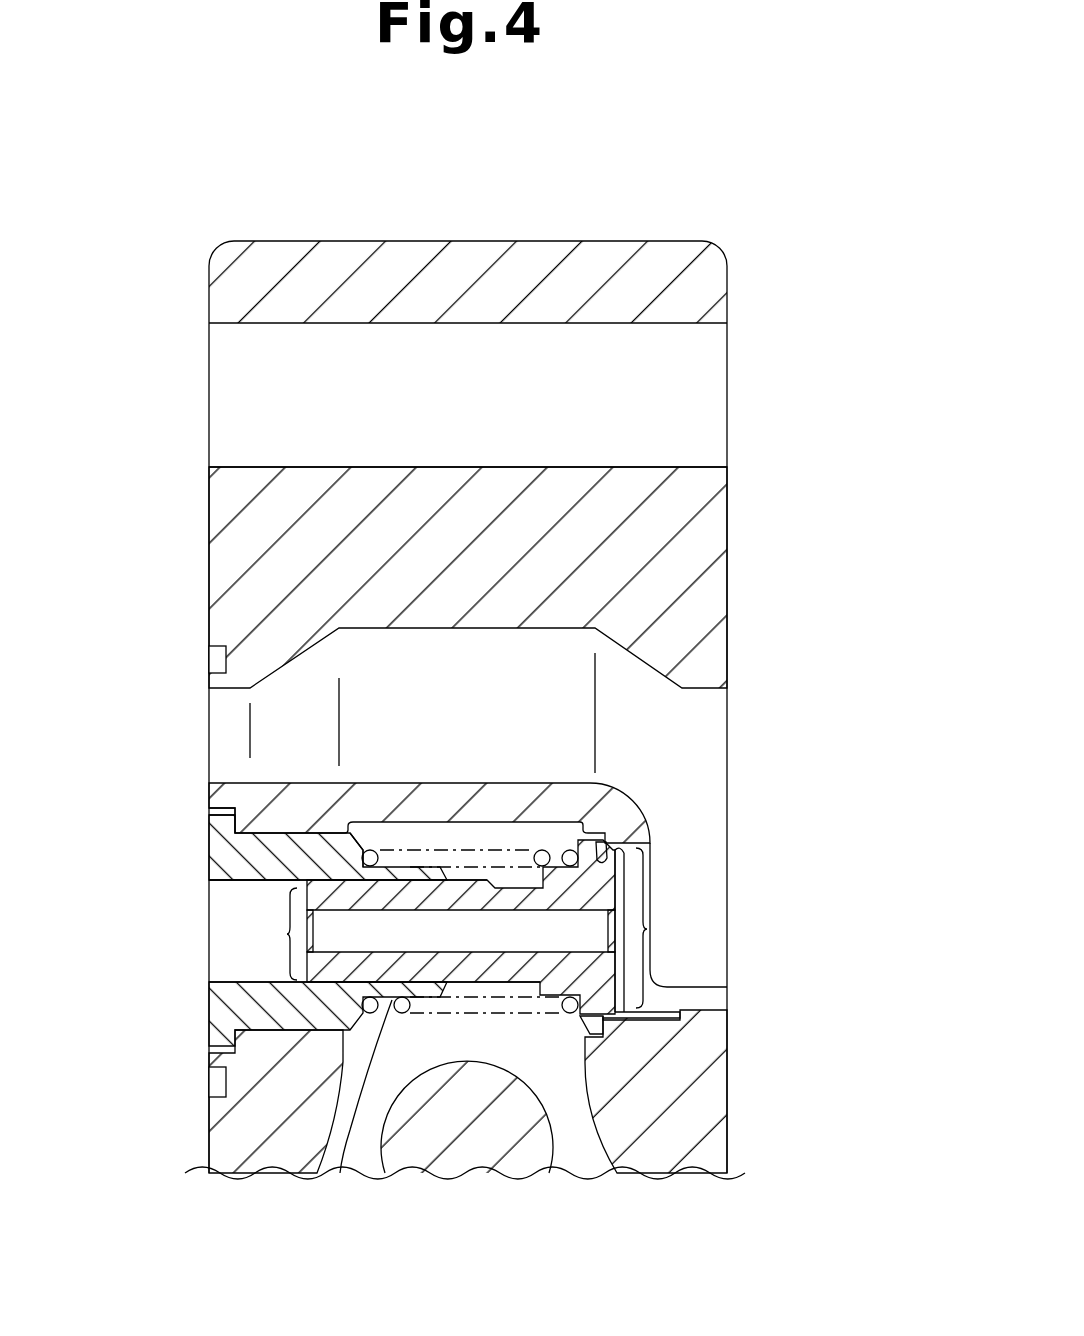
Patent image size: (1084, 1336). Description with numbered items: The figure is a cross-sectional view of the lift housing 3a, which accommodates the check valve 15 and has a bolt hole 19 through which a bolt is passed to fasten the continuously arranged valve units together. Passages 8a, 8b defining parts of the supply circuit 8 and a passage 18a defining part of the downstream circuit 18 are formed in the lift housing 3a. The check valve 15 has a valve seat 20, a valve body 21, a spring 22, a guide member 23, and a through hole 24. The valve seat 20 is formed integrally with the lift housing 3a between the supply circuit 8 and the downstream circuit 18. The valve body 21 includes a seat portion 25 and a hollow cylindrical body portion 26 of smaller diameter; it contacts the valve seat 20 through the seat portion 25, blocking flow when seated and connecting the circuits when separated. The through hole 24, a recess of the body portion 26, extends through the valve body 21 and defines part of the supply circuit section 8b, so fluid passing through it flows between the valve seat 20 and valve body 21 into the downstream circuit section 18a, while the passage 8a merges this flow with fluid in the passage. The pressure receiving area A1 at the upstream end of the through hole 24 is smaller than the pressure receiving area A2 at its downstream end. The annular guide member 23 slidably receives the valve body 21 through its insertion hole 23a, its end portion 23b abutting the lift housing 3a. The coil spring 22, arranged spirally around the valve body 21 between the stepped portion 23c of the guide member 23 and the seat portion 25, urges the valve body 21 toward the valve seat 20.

The lift housing 3a is at (533, 252).
The bolt hole 19 is at (705, 406).
The supply circuit 8 is at (465, 672).
The passage (supply circuit section) 8a is at (697, 733).
The passage (supply circuit section) 8b is at (222, 963).
The check valve 15 is at (491, 967).
The valve seat 20 is at (608, 863).
The valve body 21 is at (614, 1047).
The spring 22 is at (540, 850).
The guide member 23 is at (220, 1022).
The insertion hole 23a is at (240, 896).
The end portion 23b is at (222, 823).
The stepped portion 23c is at (363, 837).
The through hole 24 is at (603, 938).
The seat portion 25 is at (605, 975).
The body portion 26 is at (340, 1173).
The downstream circuit 18 is at (526, 1156).
The passage (downstream circuit section) 18a is at (592, 1158).
The pressure receiving area A1 is at (268, 934).
The pressure receiving area A2 is at (666, 928).